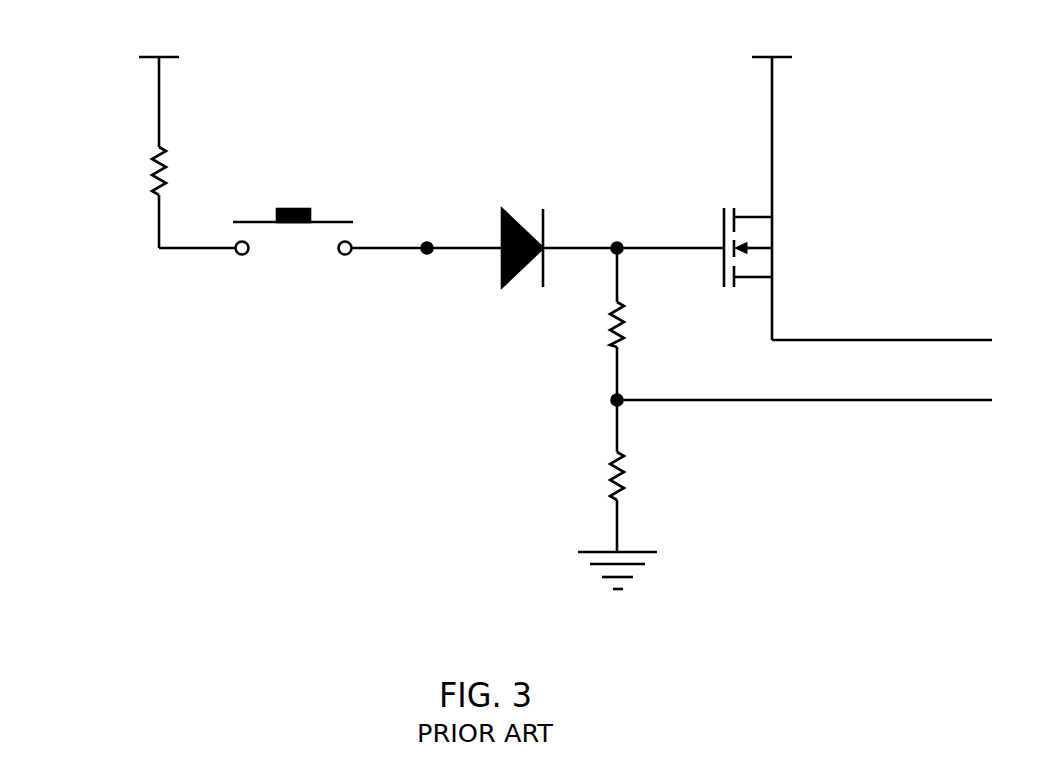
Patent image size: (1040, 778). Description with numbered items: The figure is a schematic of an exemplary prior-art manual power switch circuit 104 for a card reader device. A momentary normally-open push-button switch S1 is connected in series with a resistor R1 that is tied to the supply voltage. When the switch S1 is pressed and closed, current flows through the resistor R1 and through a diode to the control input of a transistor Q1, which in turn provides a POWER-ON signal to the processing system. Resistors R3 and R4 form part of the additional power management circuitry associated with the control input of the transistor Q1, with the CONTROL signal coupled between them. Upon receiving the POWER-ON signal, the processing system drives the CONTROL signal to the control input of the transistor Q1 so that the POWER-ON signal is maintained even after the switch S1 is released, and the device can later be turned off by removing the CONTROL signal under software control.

The manual power switch circuit 104 is at (913, 623).
The resistor R1 is at (139, 171).
The momentary normally-open push-button switch S1 is at (293, 208).
The resistor R3 is at (636, 324).
The resistor R4 is at (636, 476).
The transistor Q1 is at (770, 274).